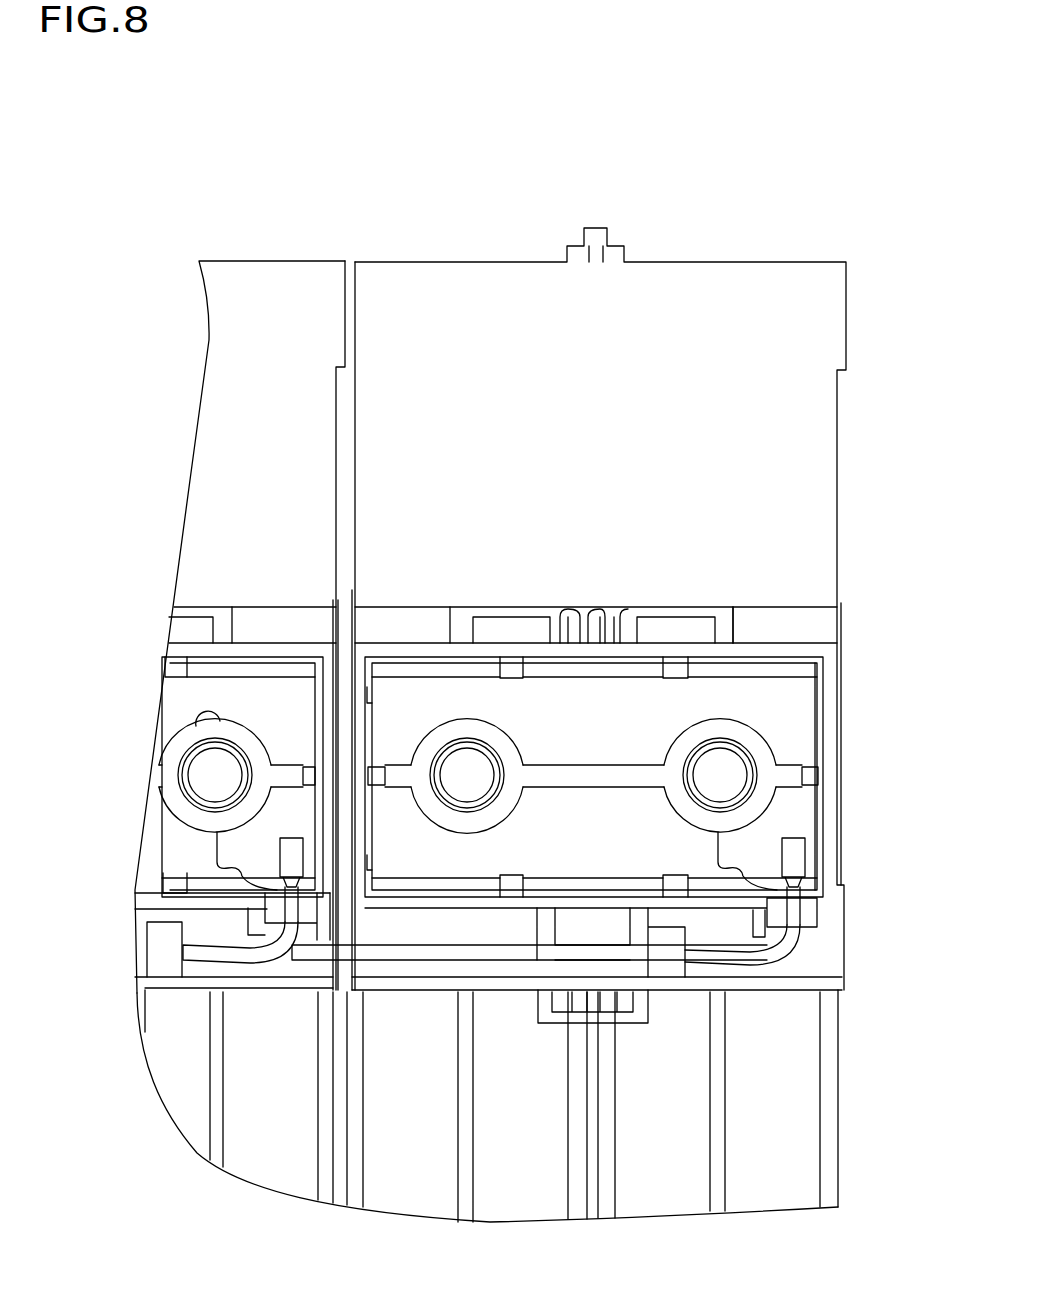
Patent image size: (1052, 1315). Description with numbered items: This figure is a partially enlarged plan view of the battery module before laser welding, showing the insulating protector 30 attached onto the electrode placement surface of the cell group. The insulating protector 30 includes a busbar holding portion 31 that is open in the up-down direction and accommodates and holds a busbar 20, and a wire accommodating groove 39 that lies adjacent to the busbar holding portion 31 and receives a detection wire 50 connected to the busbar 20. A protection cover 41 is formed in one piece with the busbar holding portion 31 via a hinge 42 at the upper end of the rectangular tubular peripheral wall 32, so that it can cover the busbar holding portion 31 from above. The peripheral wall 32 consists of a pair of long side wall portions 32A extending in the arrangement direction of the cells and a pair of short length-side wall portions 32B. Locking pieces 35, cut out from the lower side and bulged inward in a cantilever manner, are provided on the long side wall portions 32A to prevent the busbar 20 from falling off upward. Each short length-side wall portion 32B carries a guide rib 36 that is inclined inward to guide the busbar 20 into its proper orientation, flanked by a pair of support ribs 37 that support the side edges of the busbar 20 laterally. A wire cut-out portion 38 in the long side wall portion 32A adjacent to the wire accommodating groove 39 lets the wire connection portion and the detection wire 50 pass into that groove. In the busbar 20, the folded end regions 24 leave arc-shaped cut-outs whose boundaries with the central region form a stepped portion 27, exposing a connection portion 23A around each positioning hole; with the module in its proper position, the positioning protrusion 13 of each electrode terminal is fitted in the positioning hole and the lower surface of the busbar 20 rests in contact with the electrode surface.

The protection cover 41 is at (737, 293).
The busbar holding portion 31 is at (622, 658).
The busbar 20 is at (425, 700).
The end region 24 is at (242, 698).
The hinge 42 is at (776, 630).
The insulating protector 30 is at (844, 626).
The stepped portion 27 is at (195, 727).
The positioning protrusion 13 is at (213, 780).
The long side wall portion 32A is at (743, 650).
The short length-side wall portion 32B is at (830, 753).
The peripheral wall 32 is at (903, 695).
The guide rib 36 is at (818, 777).
The connection portion 23A is at (437, 812).
The support rib 37 is at (818, 845).
The wire accommodating groove 39 is at (822, 960).
The wire cut-out portion 38 is at (782, 957).
The detection wire 50 is at (714, 957).
The locking piece 35 is at (675, 888).